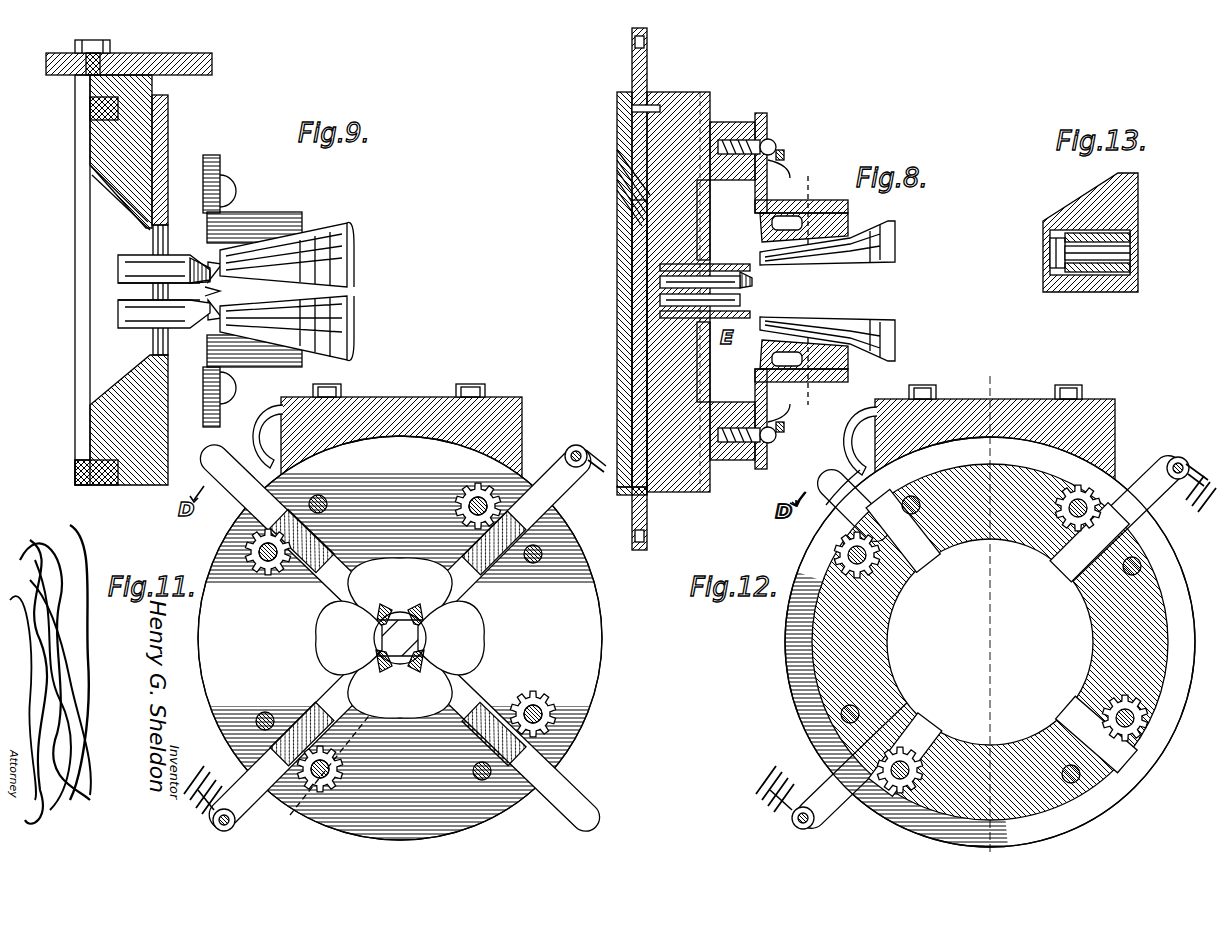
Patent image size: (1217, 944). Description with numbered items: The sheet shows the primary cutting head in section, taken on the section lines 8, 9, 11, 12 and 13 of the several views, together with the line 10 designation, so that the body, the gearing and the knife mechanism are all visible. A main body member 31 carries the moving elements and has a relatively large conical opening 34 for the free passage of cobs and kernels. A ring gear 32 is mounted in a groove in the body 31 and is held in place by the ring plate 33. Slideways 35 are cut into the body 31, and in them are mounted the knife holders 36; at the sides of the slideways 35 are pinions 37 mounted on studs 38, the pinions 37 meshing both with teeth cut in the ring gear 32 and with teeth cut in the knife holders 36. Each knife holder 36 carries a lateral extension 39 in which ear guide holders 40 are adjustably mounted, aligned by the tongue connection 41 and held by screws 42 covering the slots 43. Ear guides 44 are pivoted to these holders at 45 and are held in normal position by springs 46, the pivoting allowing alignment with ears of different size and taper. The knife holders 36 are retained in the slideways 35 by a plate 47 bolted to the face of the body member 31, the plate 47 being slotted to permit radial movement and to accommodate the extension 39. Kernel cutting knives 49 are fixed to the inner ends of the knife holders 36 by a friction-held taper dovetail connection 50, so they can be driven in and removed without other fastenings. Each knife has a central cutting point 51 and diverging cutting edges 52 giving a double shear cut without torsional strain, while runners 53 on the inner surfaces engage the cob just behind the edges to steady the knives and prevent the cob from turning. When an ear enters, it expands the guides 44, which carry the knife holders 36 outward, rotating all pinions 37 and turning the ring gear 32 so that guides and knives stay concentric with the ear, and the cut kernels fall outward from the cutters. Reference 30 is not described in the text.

In FIG. 11, the section line 8— 8 is at (584, 450).
In FIG. 12, the section line 8— 8 is at (1186, 462).
In FIG. 12, the section line 9— 9 is at (1038, 846).
In FIG. 8, the section line 10— 10 is at (812, 288).
In FIG. 8, the section line 11— 11 is at (700, 92).
In FIG. 8, the section line 12— 12 is at (660, 92).
In FIG. 11, the section line 13— 13 is at (333, 761).
In FIG. 9, the mounting flange 30 is at (212, 60).
In FIG. 9, the main body member 31 is at (92, 172).
In FIG. 8, the main body member 31 is at (628, 168).
In FIG. 11, the main body member 31 is at (590, 618).
In FIG. 12, the main body member 31 is at (1000, 546).
In FIG. 9, the ring gear 32 is at (90, 105).
In FIG. 8, the ring gear 32 is at (632, 109).
In FIG. 12, the ring gear 32 is at (832, 522).
In FIG. 9, the ring plate 33 is at (92, 138).
In FIG. 8, the ring plate 33 is at (617, 142).
In FIG. 13, the ring plate 33 is at (1052, 283).
In FIG. 9, the conical opening 34 is at (100, 237).
In FIG. 8, the conical opening 34 is at (640, 336).
In FIG. 12, the slideways 35 is at (1001, 642).
In FIG. 8, the knife holders 36 is at (677, 130).
In FIG. 11, the knife holders 36 is at (326, 576).
In FIG. 12, the knife holders 36 is at (990, 642).
In FIG. 13, the pinions 37 is at (1093, 273).
In FIG. 11, the pinions 37 is at (474, 484).
In FIG. 12, the pinions 37 is at (880, 570).
In FIG. 13, the studs 38 is at (1110, 262).
In FIG. 11, the studs 38 is at (268, 564).
In FIG. 12, the studs 38 is at (1096, 498).
In FIG. 9, the lateral extension 39 is at (200, 178).
In FIG. 8, the lateral extension 39 is at (730, 128).
In FIG. 11, the lateral extension 39 is at (516, 532).
In FIG. 9, the ear guide holders 40 is at (222, 180).
In FIG. 8, the ear guide holders 40 is at (782, 170).
In FIG. 11, the ear guide holders 40 is at (268, 456).
In FIG. 12, the ear guide holders 40 is at (860, 441).
In FIG. 8, the tongue connection 41 is at (762, 118).
In FIG. 8, the screws 42 is at (782, 148).
In FIG. 8, the slots 43 is at (768, 138).
In FIG. 9, the ear guides 44 is at (344, 330).
In FIG. 8, the ear guides 44 is at (892, 340).
In FIG. 8, the pivot 45 is at (830, 212).
In FIG. 8, the springs 46 is at (780, 216).
In FIG. 9, the plate 47 is at (168, 126).
In FIG. 8, the plate 47 is at (727, 203).
In FIG. 13, the plate 47 is at (1132, 218).
In FIG. 9, the kernel cutting knives 49 is at (200, 266).
In FIG. 8, the kernel cutting knives 49 is at (742, 268).
In FIG. 11, the kernel cutting knives 49 is at (376, 634).
In FIG. 11, the taper dovetail connection 50 is at (404, 606).
In FIG. 9, the central cutting point 51 is at (208, 318).
In FIG. 9, the diverging cutting edges 52 is at (214, 292).
In FIG. 9, the runners 53 is at (125, 277).
In FIG. 8, the runners 53 is at (660, 284).